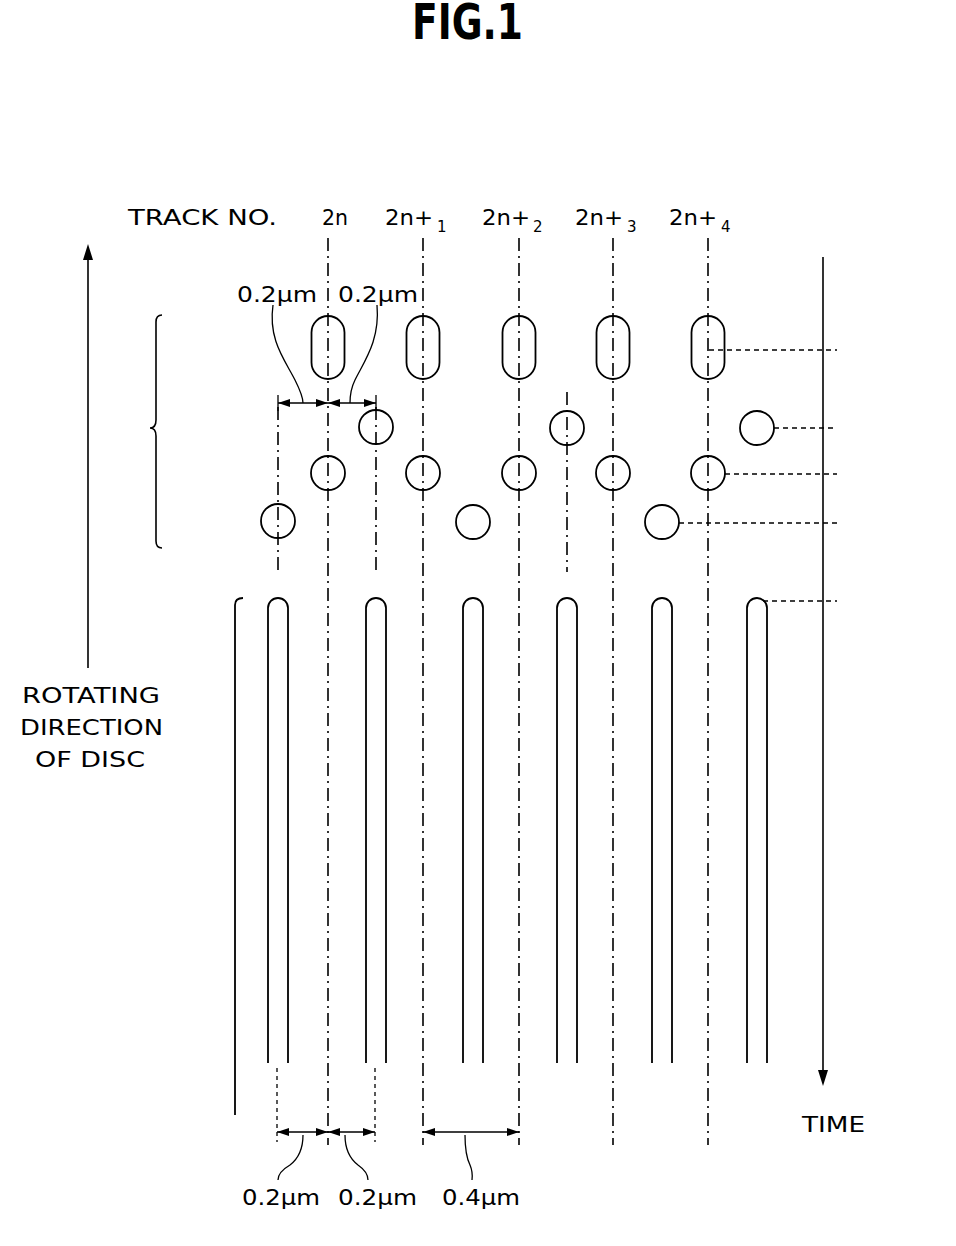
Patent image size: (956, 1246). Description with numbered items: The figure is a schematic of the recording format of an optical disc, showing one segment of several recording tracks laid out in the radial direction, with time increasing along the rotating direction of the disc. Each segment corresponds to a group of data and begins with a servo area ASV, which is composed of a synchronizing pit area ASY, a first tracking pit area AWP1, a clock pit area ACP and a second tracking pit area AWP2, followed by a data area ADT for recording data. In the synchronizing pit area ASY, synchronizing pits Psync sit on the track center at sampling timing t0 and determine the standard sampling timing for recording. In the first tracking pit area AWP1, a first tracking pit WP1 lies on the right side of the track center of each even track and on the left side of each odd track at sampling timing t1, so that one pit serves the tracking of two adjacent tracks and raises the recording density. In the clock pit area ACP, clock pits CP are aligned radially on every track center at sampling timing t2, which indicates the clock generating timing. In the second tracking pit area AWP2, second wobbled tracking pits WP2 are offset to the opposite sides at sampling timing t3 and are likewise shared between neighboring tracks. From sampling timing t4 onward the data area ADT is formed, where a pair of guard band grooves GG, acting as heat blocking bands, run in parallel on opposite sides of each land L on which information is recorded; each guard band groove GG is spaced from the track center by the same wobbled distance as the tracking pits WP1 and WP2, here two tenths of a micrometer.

The servo area ASV is at (128, 431).
The synchronizing pit area ASY is at (486, 328).
The synchronizing pit Psync is at (717, 324).
The first tracking pit area AWP1 is at (474, 403).
The first tracking pit WP1 is at (563, 412).
The clock pit area ACP is at (446, 458).
The clock pit CP is at (503, 470).
The second tracking pit area AWP2 is at (419, 540).
The second tracking pit WP2 is at (457, 526).
The sampling timing t0 is at (787, 353).
The sampling timing t1 is at (820, 432).
The sampling timing t2 is at (795, 478).
The sampling timing t3 is at (772, 527).
The sampling timing t4 is at (814, 605).
The data area ADT is at (236, 823).
The guard band groove GG is at (470, 867).
The land L is at (303, 915).